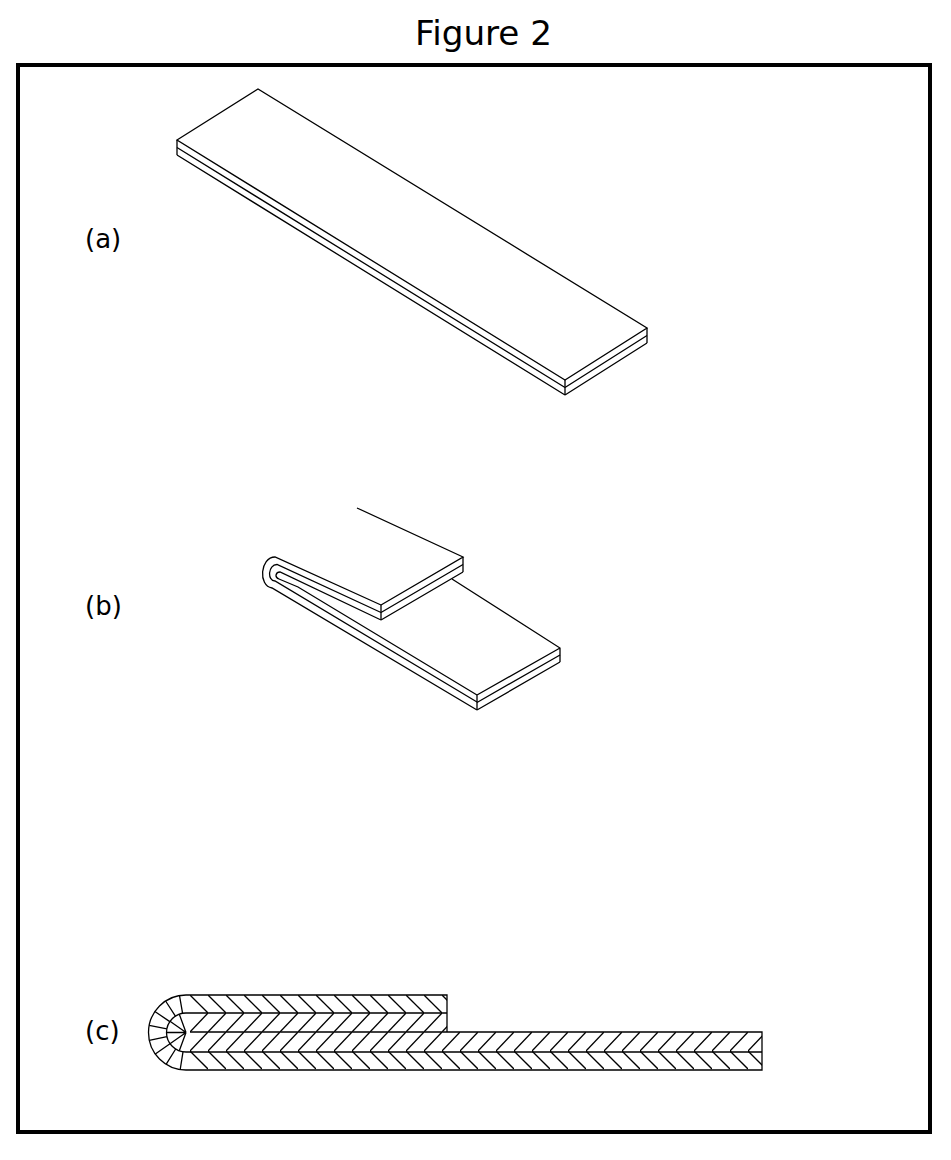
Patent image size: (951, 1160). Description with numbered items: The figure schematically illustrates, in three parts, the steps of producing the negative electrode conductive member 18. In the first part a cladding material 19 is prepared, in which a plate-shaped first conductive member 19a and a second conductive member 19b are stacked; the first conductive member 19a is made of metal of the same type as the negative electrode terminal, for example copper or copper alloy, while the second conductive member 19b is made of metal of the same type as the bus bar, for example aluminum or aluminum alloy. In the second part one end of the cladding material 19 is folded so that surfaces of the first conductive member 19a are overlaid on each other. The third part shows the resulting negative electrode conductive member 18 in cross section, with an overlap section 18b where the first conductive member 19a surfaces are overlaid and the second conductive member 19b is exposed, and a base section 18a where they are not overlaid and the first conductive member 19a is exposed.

The negative electrode conductive member 18 is at (668, 936).
The base section 18a is at (642, 1030).
The overlap section 18b is at (310, 993).
The cladding material 19 is at (728, 310).
The first conductive member 19a is at (648, 331).
The second conductive member 19b is at (648, 340).